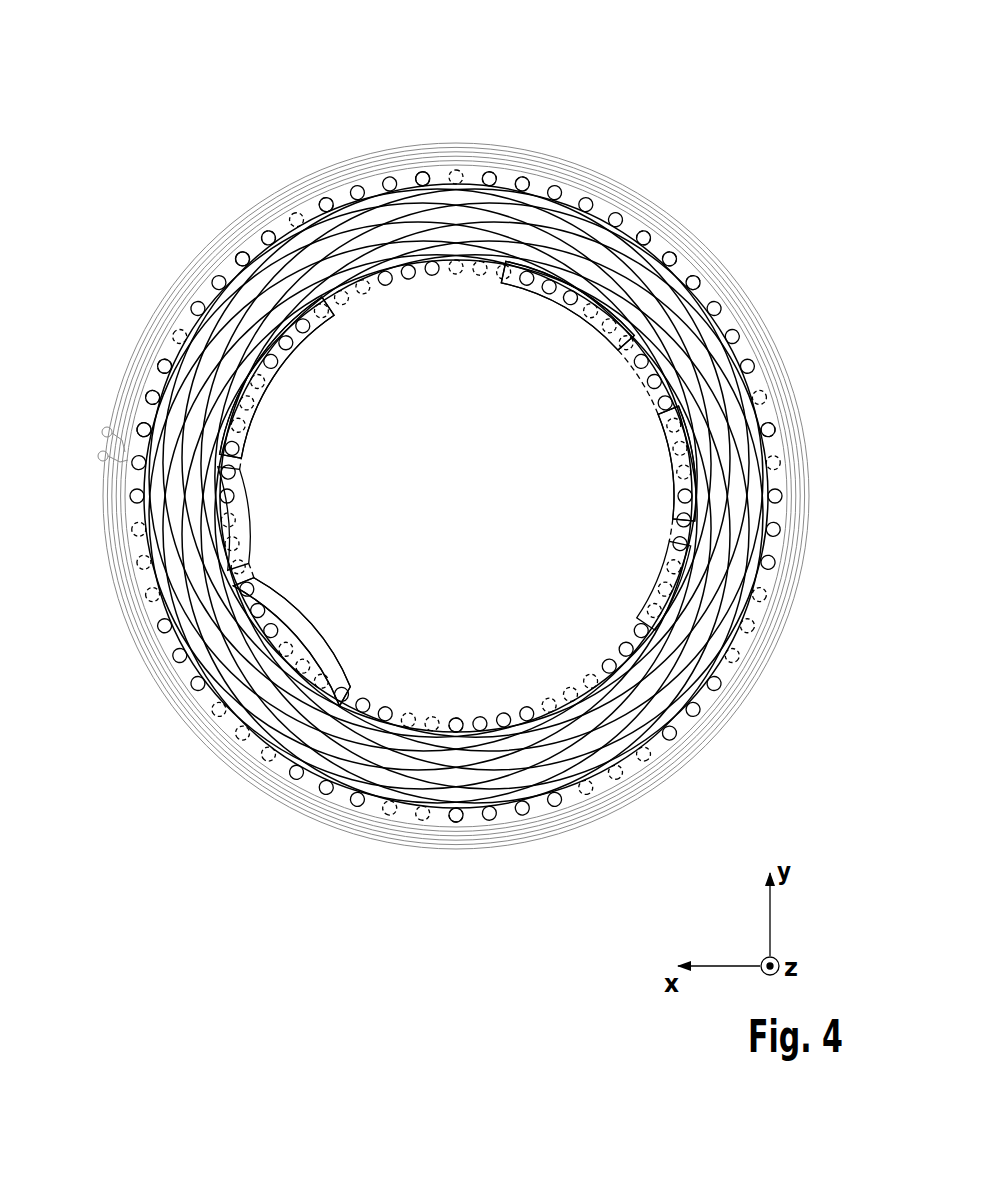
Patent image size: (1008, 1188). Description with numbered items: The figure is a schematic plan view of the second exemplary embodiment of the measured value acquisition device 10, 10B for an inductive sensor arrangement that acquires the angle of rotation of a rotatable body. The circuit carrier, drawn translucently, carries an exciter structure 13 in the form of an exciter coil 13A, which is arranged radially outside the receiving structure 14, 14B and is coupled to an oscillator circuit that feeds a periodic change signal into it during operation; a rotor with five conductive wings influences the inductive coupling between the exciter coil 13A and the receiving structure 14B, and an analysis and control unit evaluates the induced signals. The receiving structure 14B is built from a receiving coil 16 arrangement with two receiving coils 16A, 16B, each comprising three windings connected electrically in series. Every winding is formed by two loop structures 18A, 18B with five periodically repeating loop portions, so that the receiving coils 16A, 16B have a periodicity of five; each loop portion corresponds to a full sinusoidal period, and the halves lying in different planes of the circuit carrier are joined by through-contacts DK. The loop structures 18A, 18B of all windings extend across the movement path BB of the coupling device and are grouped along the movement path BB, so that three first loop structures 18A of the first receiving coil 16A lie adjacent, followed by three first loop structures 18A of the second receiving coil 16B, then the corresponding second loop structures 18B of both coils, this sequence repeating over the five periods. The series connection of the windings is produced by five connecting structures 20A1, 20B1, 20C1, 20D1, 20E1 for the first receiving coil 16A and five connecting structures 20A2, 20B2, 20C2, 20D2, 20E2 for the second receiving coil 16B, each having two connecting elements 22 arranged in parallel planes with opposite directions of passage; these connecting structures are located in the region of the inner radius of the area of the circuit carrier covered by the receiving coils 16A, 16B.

The measured value acquisition device 10 is at (460, 460).
The measured value acquisition device 10B is at (170, 100).
The exciter structure 13 is at (423, 496).
The exciter coil 13A is at (165, 743).
The receiving structure 14 is at (487, 496).
The receiving structure 14B is at (750, 348).
The receiving coil 16 is at (456, 456).
The first receiving coil 16A is at (608, 100).
The second receiving coil 16B is at (132, 154).
The first loop structure 18A is at (468, 207).
The second loop structure 18B is at (314, 248).
The connecting structure 20A1 is at (320, 660).
The connecting structure 20B1 is at (280, 614).
The connecting structure 20C1 is at (242, 483).
The connecting structure 20D1 is at (273, 404).
The connecting structure 20E1 is at (296, 360).
The connecting structure 20A2 is at (516, 291).
The connecting structure 20B2 is at (583, 317).
The connecting structure 20C2 is at (668, 426).
The connecting structure 20D2 is at (672, 512).
The connecting structure 20E2 is at (648, 588).
The connecting element 22 is at (283, 370).
The movement path BB is at (742, 425).
The through-contact DK is at (455, 718).